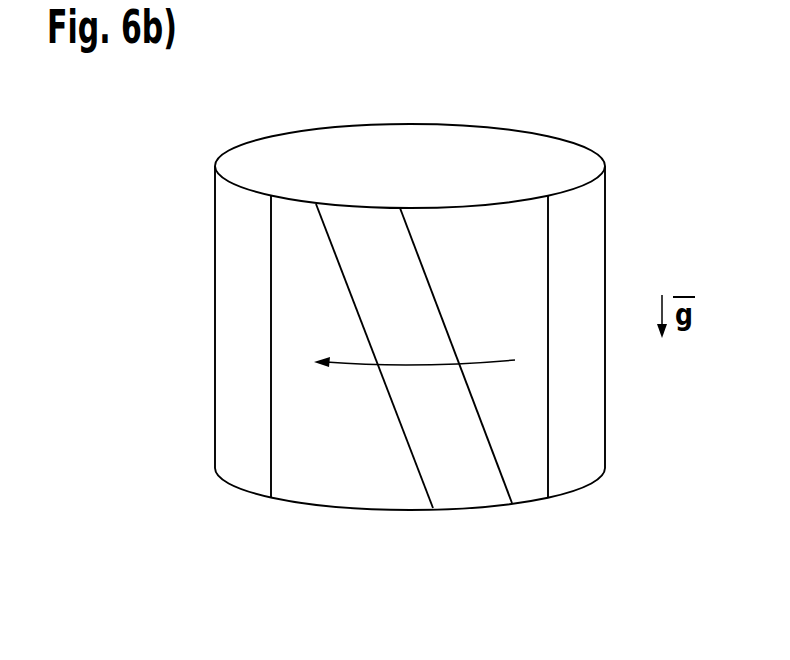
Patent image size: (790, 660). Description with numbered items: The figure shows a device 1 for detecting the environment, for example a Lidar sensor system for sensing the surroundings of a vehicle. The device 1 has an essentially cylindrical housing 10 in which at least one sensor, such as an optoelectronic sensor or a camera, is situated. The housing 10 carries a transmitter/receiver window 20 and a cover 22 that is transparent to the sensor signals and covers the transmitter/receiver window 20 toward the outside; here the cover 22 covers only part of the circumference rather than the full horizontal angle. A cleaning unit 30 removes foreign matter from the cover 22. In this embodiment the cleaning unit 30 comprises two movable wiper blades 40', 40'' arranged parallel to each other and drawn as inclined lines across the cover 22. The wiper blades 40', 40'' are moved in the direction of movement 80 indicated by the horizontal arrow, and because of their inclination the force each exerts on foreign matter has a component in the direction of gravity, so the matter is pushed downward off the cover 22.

The device 1 is at (553, 100).
The housing 10 is at (595, 225).
The transmitter/receiver window 20 is at (307, 475).
The cover 22 is at (409, 347).
The cleaning unit 30 is at (458, 523).
The wiper blade 40' is at (374, 286).
The wiper blade 40'' is at (456, 284).
The direction of movement 80 is at (488, 363).